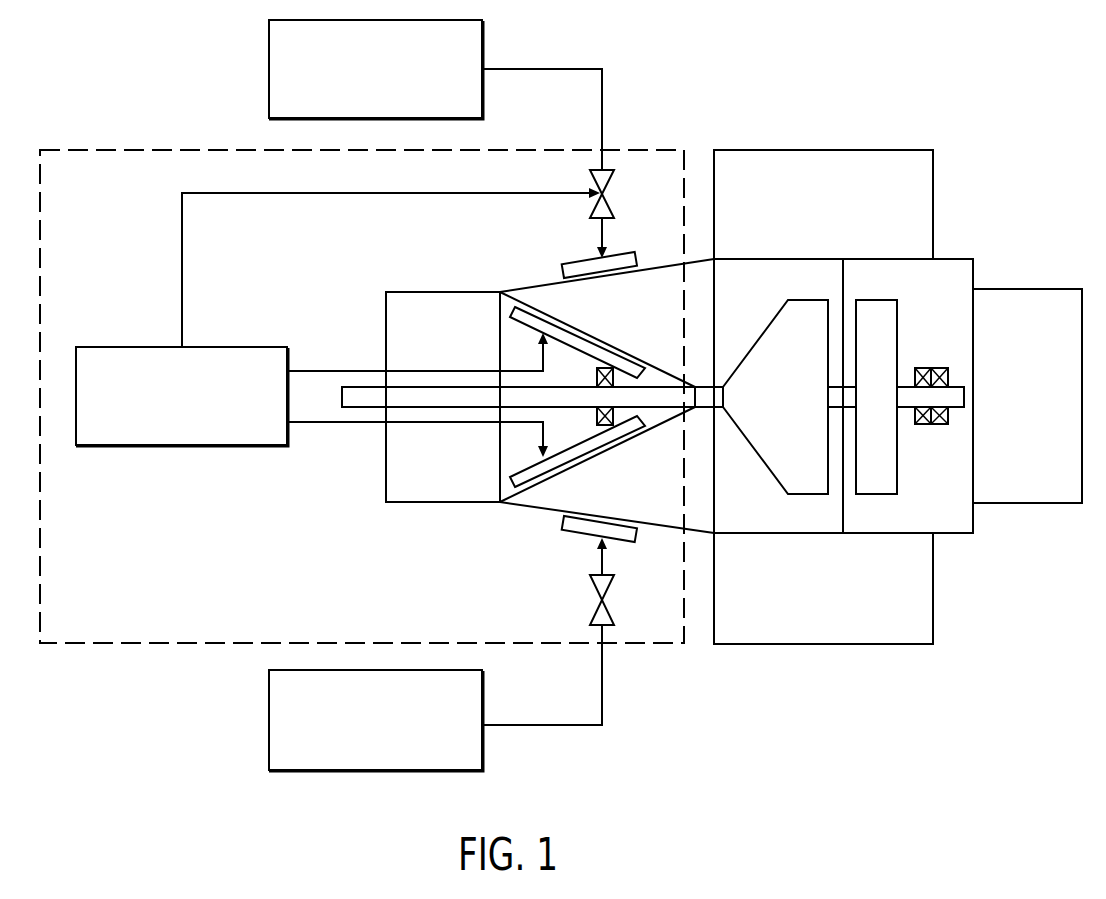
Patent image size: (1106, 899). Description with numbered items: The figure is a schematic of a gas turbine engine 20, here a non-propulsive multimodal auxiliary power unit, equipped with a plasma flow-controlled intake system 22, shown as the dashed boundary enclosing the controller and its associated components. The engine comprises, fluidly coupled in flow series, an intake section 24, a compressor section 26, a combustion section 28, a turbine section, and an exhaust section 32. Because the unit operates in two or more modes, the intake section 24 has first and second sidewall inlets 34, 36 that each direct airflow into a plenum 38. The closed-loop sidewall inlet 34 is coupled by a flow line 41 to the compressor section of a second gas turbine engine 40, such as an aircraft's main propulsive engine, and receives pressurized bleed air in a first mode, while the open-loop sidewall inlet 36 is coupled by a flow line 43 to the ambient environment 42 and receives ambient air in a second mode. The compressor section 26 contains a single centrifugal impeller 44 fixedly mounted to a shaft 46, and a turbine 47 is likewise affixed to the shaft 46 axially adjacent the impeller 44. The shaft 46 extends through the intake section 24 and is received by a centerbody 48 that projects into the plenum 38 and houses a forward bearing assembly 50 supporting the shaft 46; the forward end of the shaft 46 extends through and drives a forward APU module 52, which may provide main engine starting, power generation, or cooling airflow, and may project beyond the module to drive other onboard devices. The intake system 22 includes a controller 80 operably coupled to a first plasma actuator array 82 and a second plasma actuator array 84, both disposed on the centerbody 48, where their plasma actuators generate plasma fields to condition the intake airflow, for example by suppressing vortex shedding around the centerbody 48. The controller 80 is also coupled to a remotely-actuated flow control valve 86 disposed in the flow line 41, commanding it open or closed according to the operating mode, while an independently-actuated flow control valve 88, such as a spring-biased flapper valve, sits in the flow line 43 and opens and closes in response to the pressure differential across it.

The gas turbine engine 20 is at (966, 79).
The plasma flow-controlled intake system 22 is at (92, 196).
The intake section 24 is at (530, 290).
The compressor section 26 is at (785, 268).
The combustion section 28 is at (828, 163).
The exhaust section 32 is at (1023, 302).
The first sidewall inlet 34 is at (580, 268).
The second sidewall inlet 36 is at (580, 522).
The plenum 38 is at (632, 318).
The second gas turbine engine 40 is at (269, 68).
The flow line 41 is at (602, 107).
The ambient environment 42 is at (269, 724).
The flow line 43 is at (602, 688).
The impeller 44 is at (772, 442).
The shaft 46 is at (427, 403).
The turbine 47 is at (882, 355).
The centerbody 48 is at (657, 418).
The forward bearing assembly 50 is at (610, 422).
The forward APU module 52 is at (437, 300).
The controller 80 is at (120, 346).
The first plasma actuator array 82 is at (560, 333).
The second plasma actuator array 84 is at (560, 462).
The remotely-actuated flow control valve 86 is at (613, 200).
The independently-actuated flow control valve 88 is at (612, 590).